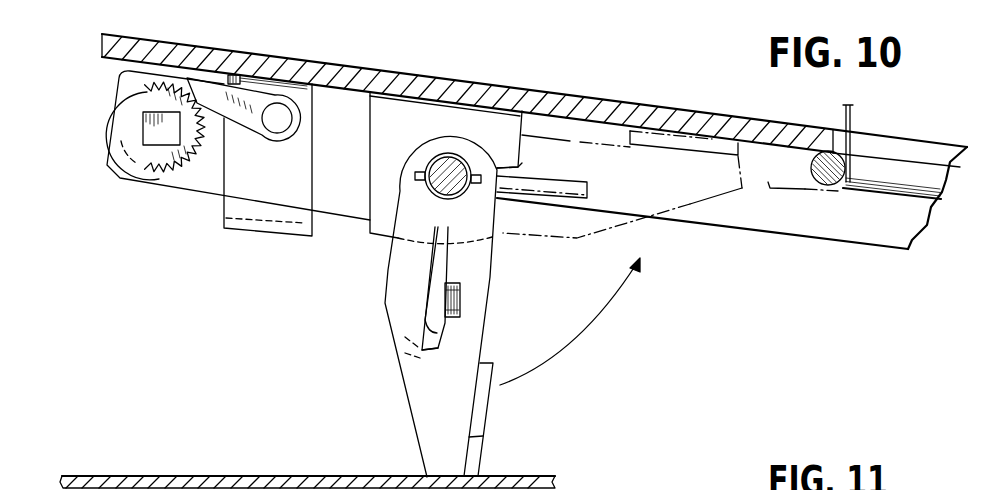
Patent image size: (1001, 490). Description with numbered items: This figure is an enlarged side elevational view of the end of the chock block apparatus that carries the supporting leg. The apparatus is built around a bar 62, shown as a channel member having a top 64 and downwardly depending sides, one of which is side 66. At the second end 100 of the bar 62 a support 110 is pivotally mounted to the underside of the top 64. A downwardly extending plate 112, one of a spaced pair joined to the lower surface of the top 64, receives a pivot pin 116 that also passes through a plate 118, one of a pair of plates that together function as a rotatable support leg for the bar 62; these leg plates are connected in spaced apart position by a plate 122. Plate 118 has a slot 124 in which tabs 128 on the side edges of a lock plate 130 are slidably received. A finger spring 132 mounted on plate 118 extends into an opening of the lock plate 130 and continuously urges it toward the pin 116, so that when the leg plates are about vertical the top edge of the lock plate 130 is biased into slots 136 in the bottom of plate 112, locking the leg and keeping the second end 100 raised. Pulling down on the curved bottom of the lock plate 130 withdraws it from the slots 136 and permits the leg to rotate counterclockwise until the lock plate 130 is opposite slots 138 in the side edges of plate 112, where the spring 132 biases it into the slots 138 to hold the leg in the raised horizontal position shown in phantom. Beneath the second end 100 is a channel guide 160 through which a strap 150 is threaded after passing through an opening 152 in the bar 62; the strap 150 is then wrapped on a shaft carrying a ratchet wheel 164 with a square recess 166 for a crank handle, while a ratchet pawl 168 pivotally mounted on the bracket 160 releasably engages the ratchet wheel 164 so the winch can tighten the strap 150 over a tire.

The bar 62 is at (698, 98).
The top 64 is at (911, 137).
The side 66 is at (877, 228).
The second end 100 is at (425, 76).
The support 110 is at (450, 306).
The plate 112 is at (380, 200).
The pivot pin 116 is at (433, 160).
The plate 118 is at (398, 278).
The plate 122 is at (487, 417).
The slot 124 is at (424, 351).
The tabs 128 is at (552, 180).
The lock plate 130 is at (424, 298).
The finger spring 132 is at (458, 307).
The slots 136 is at (434, 228).
The slots 138 is at (523, 167).
The strap 150 is at (843, 114).
The opening 152 is at (919, 152).
The channel guide 160 is at (218, 200).
The ratchet wheel 164 is at (143, 100).
The square recess 166 is at (153, 128).
The ratchet pawl 168 is at (227, 97).